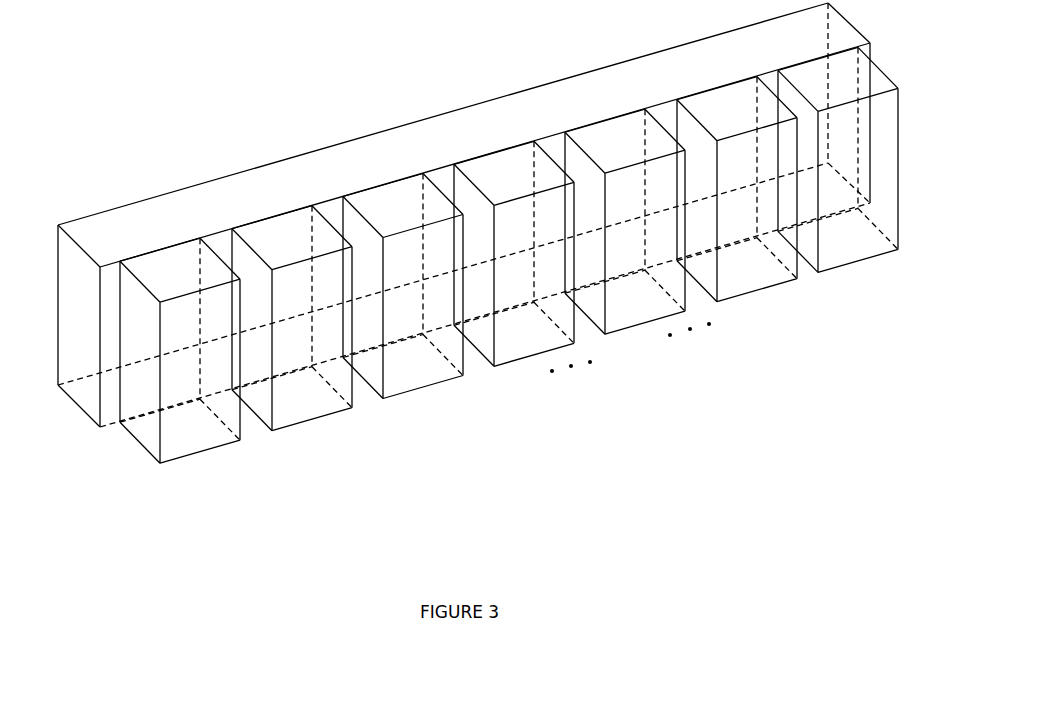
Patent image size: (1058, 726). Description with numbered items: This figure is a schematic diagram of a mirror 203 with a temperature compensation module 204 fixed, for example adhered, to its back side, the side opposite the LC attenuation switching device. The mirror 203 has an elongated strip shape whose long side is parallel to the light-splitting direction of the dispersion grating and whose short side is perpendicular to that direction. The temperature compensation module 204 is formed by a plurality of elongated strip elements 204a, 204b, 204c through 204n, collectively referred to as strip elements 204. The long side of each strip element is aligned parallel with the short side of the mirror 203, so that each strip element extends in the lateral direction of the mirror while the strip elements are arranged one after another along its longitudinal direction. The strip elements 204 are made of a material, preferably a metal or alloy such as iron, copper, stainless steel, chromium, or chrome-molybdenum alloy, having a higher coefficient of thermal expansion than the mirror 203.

The mirror 203 is at (200, 212).
The temperature compensation module 204 is at (469, 294).
The strip element 204a is at (180, 362).
The strip element 204b is at (292, 328).
The strip element 204c is at (403, 297).
The strip element 204n is at (838, 171).